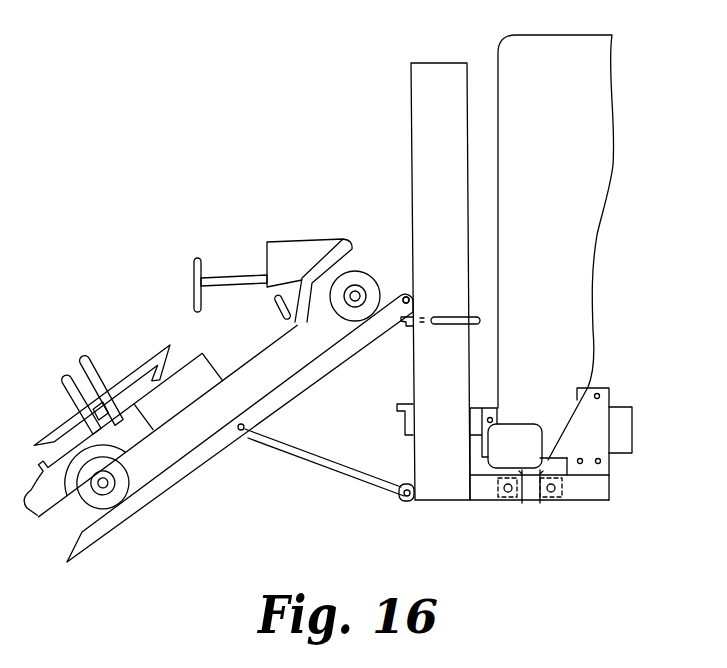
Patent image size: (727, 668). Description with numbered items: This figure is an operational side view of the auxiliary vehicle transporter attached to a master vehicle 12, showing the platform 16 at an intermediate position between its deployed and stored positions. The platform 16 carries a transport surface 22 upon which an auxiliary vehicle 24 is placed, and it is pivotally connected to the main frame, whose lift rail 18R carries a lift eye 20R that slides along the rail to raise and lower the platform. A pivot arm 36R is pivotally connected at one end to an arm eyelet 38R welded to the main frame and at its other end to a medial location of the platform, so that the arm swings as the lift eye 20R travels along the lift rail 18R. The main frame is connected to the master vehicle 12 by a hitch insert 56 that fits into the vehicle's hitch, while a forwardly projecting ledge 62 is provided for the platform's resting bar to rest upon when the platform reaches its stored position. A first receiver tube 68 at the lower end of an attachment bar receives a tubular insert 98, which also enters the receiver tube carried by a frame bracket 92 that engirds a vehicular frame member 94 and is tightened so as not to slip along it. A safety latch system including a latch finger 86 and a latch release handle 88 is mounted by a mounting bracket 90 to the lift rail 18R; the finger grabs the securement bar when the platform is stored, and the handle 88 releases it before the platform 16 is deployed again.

The master vehicle 12 is at (610, 218).
The platform 16 is at (154, 510).
The lift rail 18R is at (411, 152).
The lift eye 20R is at (404, 290).
The transport surface 22 is at (208, 442).
The auxiliary vehicle 24 is at (250, 240).
The pivot arm 36R is at (313, 462).
The arm eyelet 38R is at (410, 503).
The hitch insert 56 is at (477, 408).
The ledge 62 is at (397, 400).
The first receiver tube 68 is at (487, 502).
The latch finger 86 is at (401, 327).
The latch release handle 88 is at (452, 316).
The mounting bracket 90 is at (568, 502).
The frame bracket 92 is at (620, 391).
The vehicular frame member 94 is at (620, 457).
The tubular insert 98 is at (532, 502).